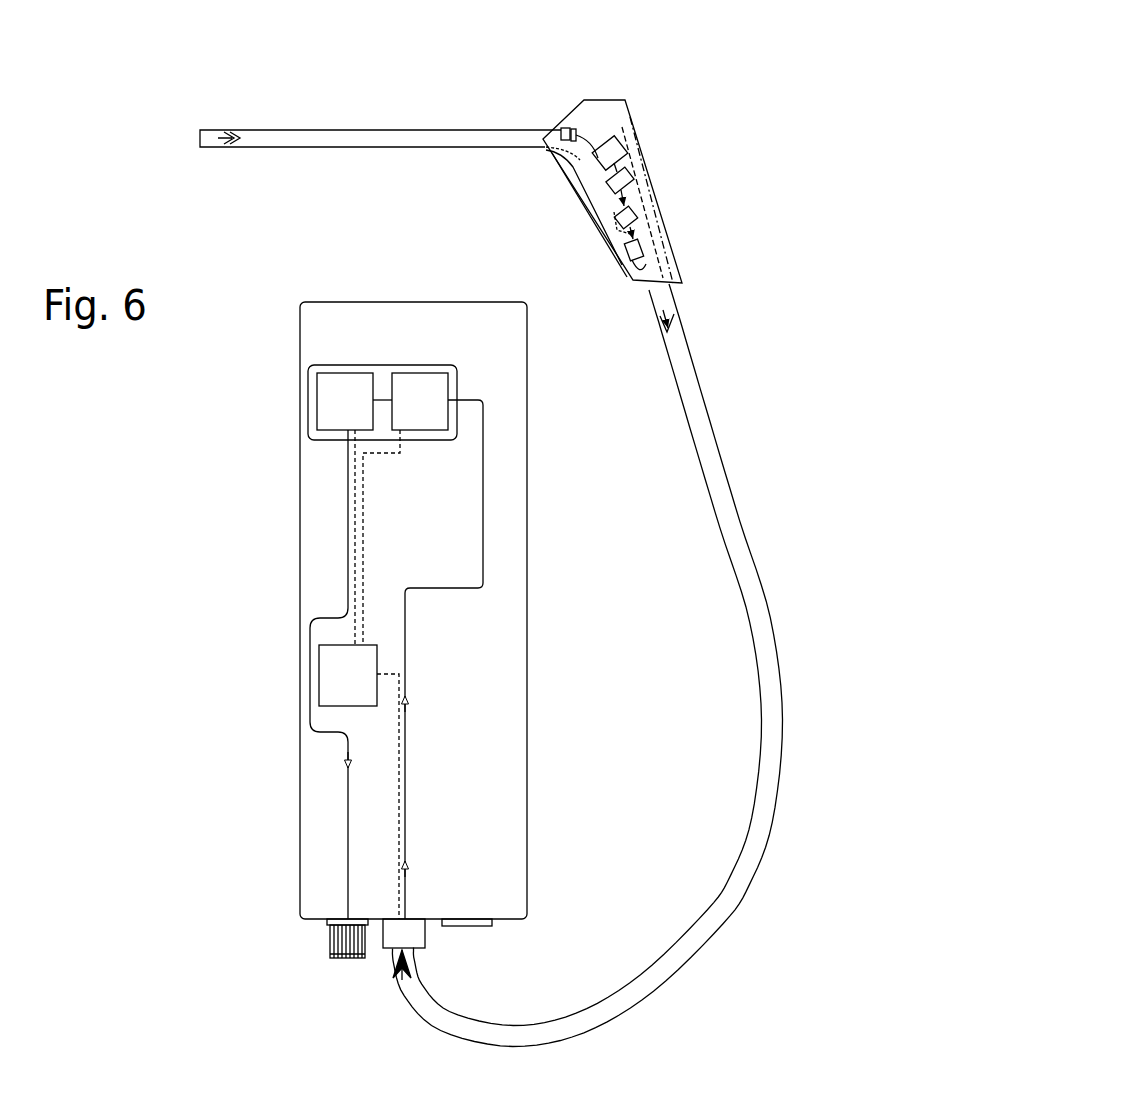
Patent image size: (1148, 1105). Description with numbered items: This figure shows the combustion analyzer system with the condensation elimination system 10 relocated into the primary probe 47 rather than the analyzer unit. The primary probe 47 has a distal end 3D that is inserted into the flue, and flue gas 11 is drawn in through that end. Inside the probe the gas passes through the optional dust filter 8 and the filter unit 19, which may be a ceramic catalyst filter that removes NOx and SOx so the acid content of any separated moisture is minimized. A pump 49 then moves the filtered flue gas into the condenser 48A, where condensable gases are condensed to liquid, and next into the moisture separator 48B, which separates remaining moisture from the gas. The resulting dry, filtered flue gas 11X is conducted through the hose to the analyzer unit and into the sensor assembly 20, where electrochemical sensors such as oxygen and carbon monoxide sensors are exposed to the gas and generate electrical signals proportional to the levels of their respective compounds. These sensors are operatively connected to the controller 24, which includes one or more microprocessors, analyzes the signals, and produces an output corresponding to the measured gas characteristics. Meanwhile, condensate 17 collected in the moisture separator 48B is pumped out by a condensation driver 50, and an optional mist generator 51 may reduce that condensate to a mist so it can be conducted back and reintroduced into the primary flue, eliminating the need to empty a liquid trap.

The primary probe 47 is at (425, 57).
The distal end 3D is at (205, 118).
The flue gas 11 is at (224, 142).
The dust filter 8 is at (560, 128).
The filter unit 19 is at (577, 127).
The pump 49 is at (620, 150).
The condenser 48A is at (628, 180).
The moisture separator 48B is at (636, 214).
The condensation elimination system 10 is at (654, 210).
The dry filtered flue gas 11X is at (408, 970).
The condensate 17 is at (584, 170).
The mist generator 51 is at (600, 220).
The condensation driver 50 is at (626, 258).
The sensor assembly 20 is at (460, 366).
The controller 24 is at (330, 676).